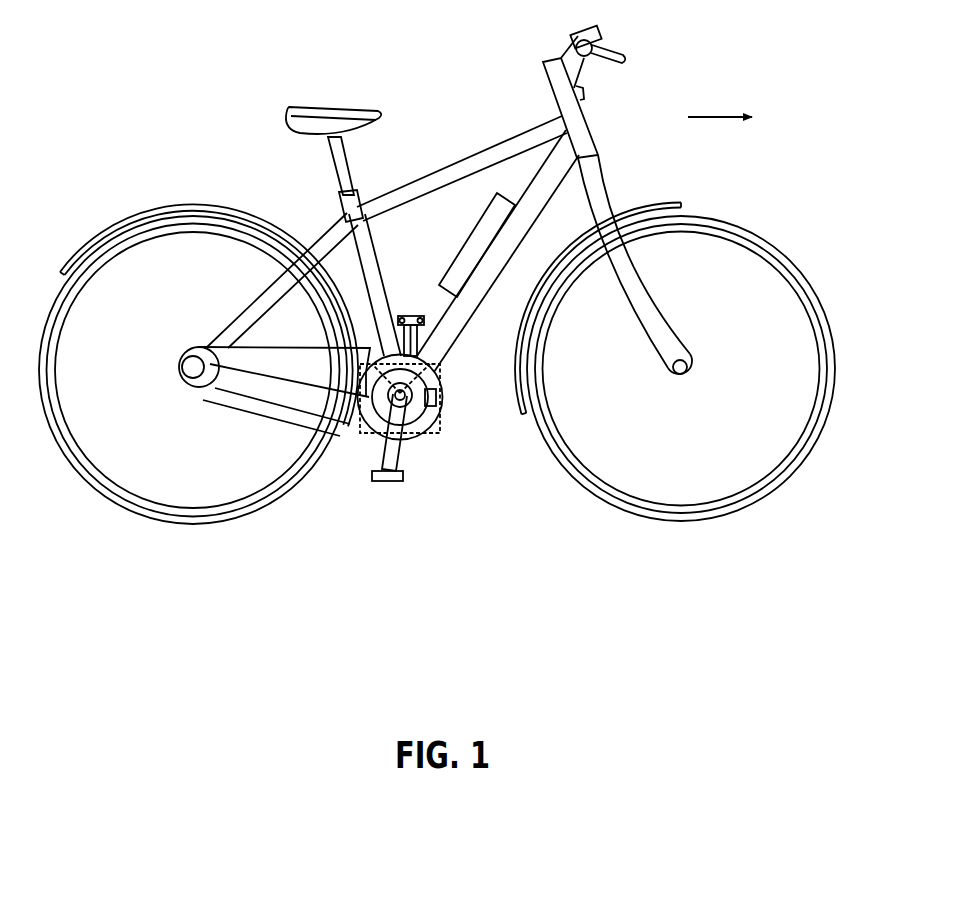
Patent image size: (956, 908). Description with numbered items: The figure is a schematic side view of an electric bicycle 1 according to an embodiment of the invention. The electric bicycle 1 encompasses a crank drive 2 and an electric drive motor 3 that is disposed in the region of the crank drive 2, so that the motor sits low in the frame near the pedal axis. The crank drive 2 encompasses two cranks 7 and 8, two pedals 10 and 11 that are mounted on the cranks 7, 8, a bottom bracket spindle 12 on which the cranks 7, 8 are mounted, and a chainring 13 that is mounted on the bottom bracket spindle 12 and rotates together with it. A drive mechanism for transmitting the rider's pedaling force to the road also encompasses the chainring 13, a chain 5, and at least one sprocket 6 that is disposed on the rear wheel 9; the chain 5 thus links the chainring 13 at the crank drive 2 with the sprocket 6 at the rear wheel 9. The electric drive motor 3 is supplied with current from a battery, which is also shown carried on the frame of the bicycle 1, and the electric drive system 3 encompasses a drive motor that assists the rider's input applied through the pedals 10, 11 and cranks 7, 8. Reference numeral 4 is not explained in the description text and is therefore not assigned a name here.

The electric bicycle 1 is at (170, 94).
The crank drive 2 is at (455, 428).
The electric drive motor 3 is at (437, 433).
The battery 4 is at (462, 248).
The chain 5 is at (218, 400).
The sprocket 6 is at (178, 368).
The crank 7 is at (438, 344).
The crank 8 is at (380, 453).
The rear wheel 9 is at (197, 217).
The pedal 10 is at (405, 316).
The pedal 11 is at (400, 483).
The bottom bracket spindle 12 is at (412, 433).
The chainring 13 is at (447, 400).